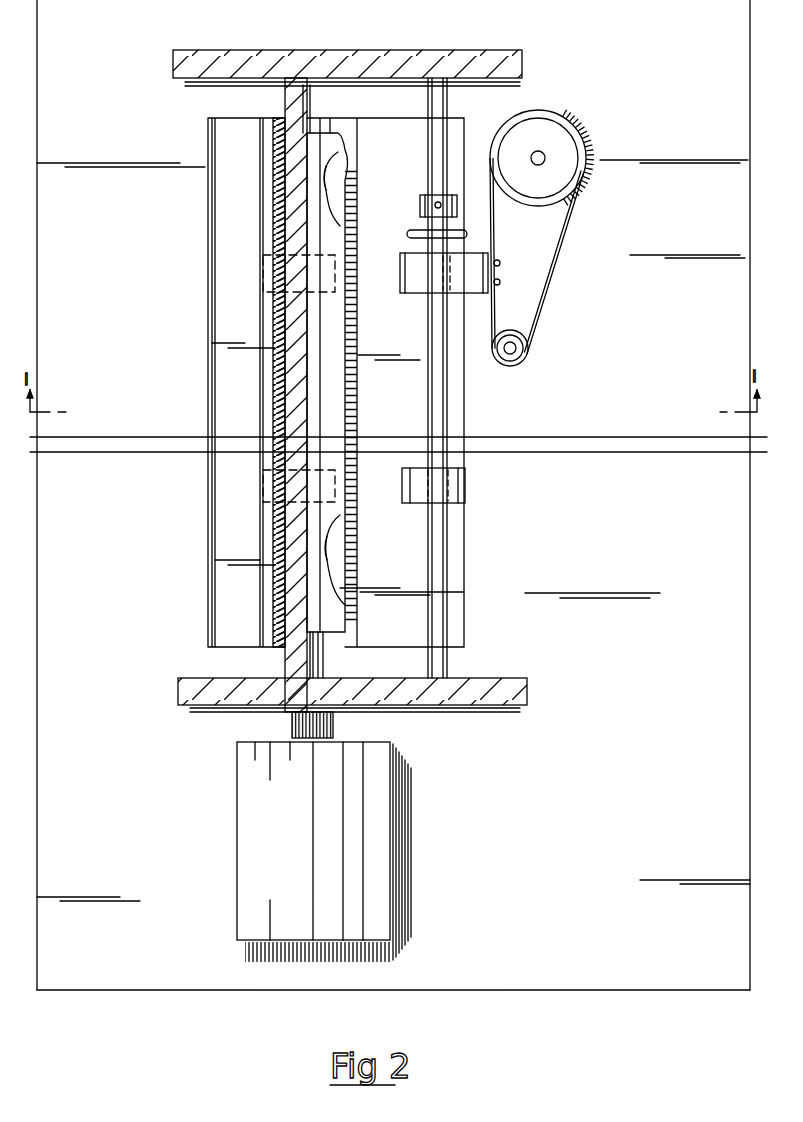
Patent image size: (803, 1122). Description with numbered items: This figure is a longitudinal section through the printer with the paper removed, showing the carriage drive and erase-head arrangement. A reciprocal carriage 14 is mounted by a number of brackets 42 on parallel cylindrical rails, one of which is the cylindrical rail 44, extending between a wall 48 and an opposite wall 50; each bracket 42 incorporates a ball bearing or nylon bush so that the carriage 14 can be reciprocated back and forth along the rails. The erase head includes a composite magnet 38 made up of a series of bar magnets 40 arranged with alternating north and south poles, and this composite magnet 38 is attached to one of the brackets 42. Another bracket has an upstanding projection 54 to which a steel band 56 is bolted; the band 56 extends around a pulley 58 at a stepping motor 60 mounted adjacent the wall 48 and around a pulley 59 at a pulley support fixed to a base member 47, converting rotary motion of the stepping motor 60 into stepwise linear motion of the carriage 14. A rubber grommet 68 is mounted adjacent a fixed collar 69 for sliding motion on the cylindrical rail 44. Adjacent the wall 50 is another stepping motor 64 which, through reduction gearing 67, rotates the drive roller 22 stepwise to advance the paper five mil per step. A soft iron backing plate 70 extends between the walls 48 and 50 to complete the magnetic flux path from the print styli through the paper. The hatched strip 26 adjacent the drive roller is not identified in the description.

The reciprocal carriage 14 is at (268, 385).
The drive roller 22 is at (325, 217).
The liner strip 26 is at (280, 306).
The composite magnet 38 is at (352, 645).
The bar magnets 40 is at (350, 170).
The brackets 42 is at (268, 264).
The cylindrical rail 44 is at (440, 548).
The base member 47 is at (606, 336).
The wall 48 is at (440, 50).
The wall 50 is at (470, 678).
The upstanding projection 54 is at (440, 280).
The steel band 56 is at (500, 263).
The pulley 58 is at (566, 154).
The pulley 59 is at (520, 355).
The stepping motor 60 is at (579, 125).
The stepping motor 64 is at (370, 830).
The reduction gearing 67 is at (335, 725).
The rubber grommet 68 is at (467, 234).
The fixed collar 69 is at (457, 205).
The soft iron backing plate 70 is at (298, 178).